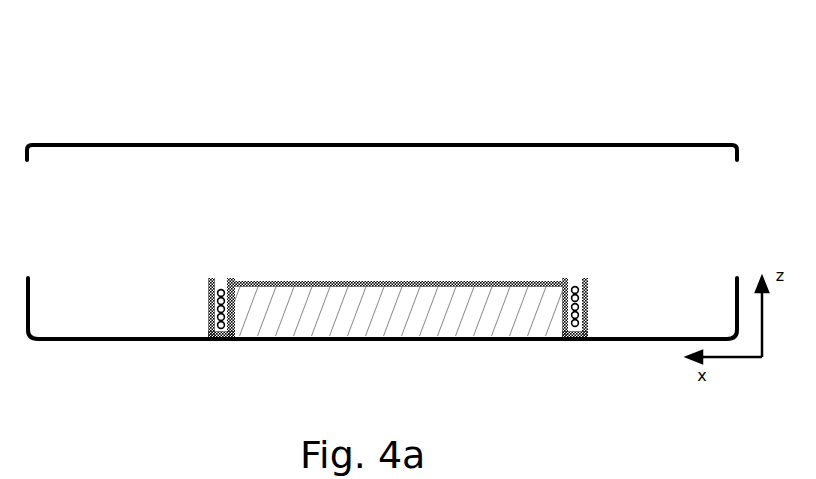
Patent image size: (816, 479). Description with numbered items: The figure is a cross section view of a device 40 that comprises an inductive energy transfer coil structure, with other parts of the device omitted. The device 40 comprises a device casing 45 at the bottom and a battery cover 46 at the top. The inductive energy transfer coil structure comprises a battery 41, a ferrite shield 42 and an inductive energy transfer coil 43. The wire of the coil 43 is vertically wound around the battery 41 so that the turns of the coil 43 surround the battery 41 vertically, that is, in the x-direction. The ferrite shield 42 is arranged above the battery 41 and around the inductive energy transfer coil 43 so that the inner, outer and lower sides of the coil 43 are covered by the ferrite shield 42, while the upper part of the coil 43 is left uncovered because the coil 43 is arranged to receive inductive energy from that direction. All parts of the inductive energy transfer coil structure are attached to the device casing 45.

The device 40 is at (382, 247).
The battery 41 is at (307, 330).
The ferrite shield 42 is at (208, 292).
The inductive energy transfer coil 43 is at (233, 290).
The device casing 45 is at (688, 337).
The battery cover 46 is at (678, 140).